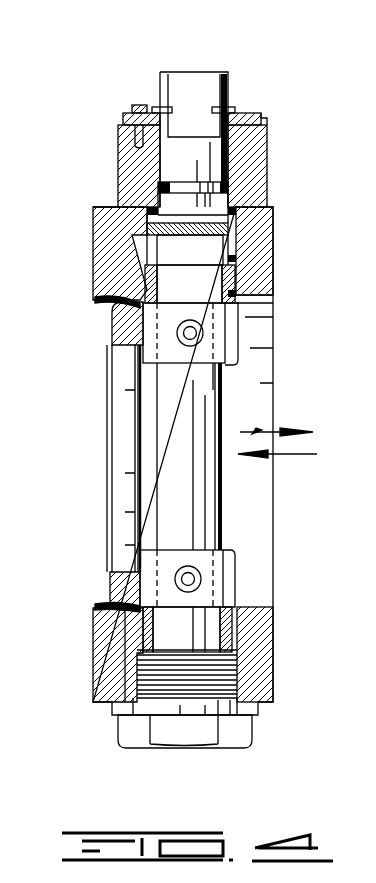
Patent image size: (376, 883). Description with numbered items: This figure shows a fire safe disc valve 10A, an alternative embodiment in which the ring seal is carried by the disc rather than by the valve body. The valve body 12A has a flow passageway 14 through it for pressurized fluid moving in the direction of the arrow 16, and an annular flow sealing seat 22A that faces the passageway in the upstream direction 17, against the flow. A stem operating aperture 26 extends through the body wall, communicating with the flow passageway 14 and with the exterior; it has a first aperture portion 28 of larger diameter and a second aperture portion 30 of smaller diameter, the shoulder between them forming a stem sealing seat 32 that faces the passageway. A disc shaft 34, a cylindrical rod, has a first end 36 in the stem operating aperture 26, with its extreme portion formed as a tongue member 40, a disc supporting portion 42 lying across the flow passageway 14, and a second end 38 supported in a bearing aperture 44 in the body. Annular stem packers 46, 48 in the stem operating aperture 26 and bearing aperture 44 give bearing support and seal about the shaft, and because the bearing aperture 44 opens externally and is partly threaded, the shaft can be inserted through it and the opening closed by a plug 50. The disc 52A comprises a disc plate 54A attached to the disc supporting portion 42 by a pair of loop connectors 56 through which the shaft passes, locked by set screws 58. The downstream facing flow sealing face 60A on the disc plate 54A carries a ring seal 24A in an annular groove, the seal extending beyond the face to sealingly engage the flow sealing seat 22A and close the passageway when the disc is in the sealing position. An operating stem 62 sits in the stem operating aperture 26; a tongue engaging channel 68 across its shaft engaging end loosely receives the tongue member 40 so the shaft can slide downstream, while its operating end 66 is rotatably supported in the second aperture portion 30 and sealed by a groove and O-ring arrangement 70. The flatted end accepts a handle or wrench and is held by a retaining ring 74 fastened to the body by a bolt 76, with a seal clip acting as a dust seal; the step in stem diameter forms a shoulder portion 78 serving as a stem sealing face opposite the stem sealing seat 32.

The fire safe disc valve 10A is at (78, 74).
The valve body 12A is at (118, 145).
The flow passageway 14 is at (262, 327).
The arrow indicating fluid flow direction 16 is at (283, 455).
The upstream direction 17 is at (262, 430).
The annular flow sealing seat 22A is at (100, 307).
The ring seal 24A is at (115, 323).
The stem operating aperture 26 is at (250, 268).
The first aperture portion 28 is at (236, 283).
The second aperture portion 30 is at (232, 156).
The stem sealing seat 32 is at (150, 214).
The disc shaft 34 is at (193, 408).
The first end 36 is at (190, 284).
The second end 38 is at (186, 629).
The tongue member 40 is at (232, 226).
The disc supporting portion 42 is at (195, 518).
The bearing aperture 44 is at (236, 625).
The annular stem packer 46 is at (236, 297).
The annular stem packer 48 is at (232, 612).
The plug 50 is at (232, 735).
The disc 52A is at (108, 453).
The disc plate 54A is at (115, 410).
The loop connectors 56 is at (236, 347).
The set screws 58 is at (190, 346).
The flow sealing face 60A is at (100, 276).
The operating stem 62 is at (172, 72).
The operating end 66 is at (206, 72).
The tongue engaging channel 68 is at (212, 247).
The groove and O-ring arrangement 70 is at (228, 188).
The retaining ring 74 is at (256, 114).
The bolt 76 is at (140, 107).
The shoulder portion 78 is at (230, 108).